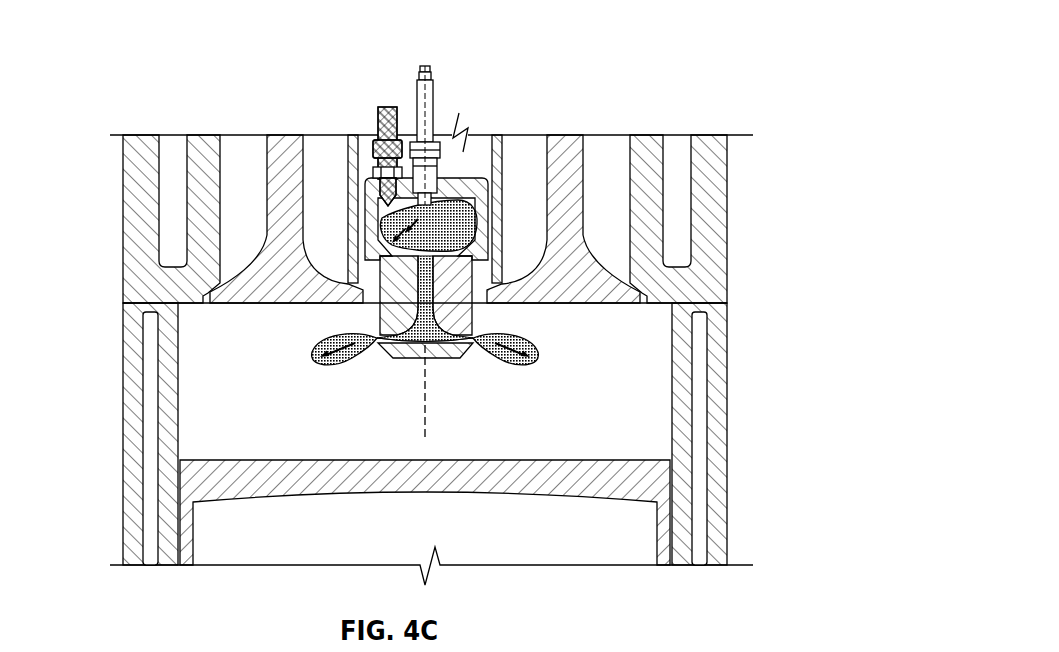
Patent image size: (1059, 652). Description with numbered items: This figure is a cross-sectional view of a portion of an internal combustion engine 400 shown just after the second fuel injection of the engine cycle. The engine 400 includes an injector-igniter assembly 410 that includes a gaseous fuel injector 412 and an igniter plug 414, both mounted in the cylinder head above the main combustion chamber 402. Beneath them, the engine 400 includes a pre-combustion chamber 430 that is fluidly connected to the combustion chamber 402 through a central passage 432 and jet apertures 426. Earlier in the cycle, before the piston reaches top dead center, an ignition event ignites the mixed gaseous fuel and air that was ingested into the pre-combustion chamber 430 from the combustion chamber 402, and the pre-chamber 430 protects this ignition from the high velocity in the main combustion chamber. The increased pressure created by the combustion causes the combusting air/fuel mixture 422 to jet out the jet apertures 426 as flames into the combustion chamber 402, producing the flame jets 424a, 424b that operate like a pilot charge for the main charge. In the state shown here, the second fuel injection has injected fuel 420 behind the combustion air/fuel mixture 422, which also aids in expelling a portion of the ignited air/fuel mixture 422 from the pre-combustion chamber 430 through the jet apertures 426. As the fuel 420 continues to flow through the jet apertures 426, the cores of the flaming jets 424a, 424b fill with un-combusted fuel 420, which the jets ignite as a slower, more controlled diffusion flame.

The engine 400 is at (176, 94).
The combustion chamber 402 is at (247, 344).
The injector-igniter assembly 410 is at (466, 96).
The gaseous fuel injector 412 is at (378, 108).
The igniter plug 414 is at (418, 82).
The fuel 420 is at (463, 225).
The combustion air/fuel mixture 422 is at (380, 324).
The flame jet 424a is at (300, 366).
The flame jet 424b is at (546, 366).
The jet apertures 426 is at (377, 350).
The pre-combustion chamber 430 is at (443, 203).
The central passage 432 is at (447, 308).